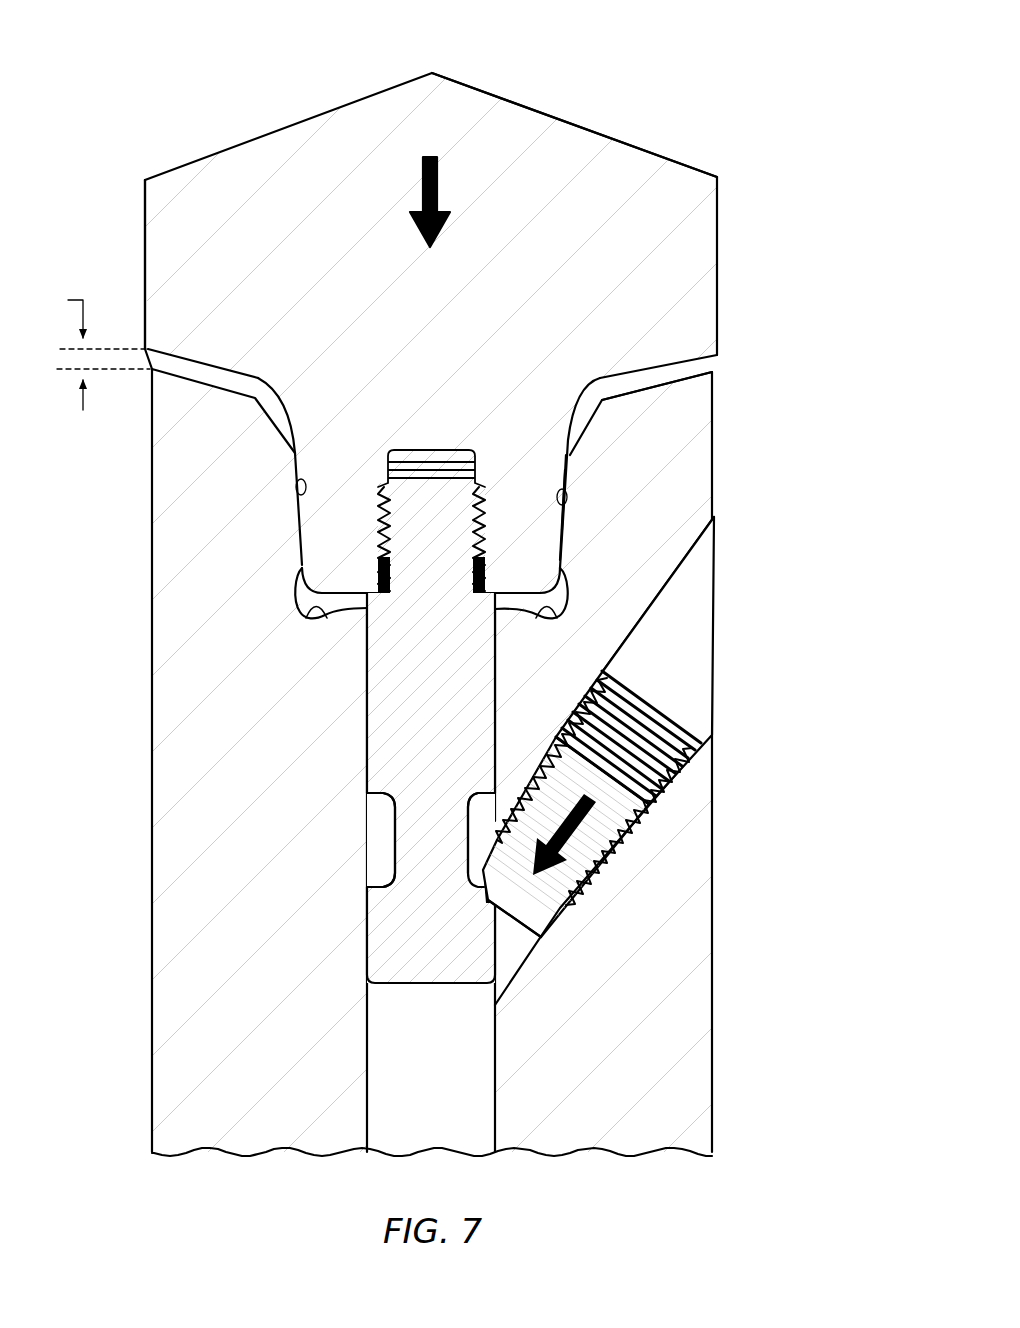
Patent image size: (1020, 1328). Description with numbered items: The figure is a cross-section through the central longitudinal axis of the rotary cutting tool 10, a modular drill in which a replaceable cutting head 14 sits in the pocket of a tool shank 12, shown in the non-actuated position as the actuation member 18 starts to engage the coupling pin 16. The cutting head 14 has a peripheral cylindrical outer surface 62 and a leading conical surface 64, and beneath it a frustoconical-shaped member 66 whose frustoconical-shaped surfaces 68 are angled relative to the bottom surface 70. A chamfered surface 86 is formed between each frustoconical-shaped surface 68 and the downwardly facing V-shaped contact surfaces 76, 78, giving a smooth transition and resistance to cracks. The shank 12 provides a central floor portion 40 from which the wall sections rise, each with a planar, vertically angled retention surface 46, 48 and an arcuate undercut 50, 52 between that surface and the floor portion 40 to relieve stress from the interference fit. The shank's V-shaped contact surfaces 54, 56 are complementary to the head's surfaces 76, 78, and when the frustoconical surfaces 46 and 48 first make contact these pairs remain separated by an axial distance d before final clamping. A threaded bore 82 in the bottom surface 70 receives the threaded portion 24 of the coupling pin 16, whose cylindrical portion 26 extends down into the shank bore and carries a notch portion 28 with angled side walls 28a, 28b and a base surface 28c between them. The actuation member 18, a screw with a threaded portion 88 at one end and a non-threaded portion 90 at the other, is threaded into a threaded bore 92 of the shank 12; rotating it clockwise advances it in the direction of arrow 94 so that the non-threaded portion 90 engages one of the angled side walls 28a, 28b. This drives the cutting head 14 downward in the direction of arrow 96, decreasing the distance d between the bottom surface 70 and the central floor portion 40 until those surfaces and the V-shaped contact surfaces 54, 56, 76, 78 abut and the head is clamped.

The rotary cutting tool 10 is at (104, 58).
The tool shank 12 is at (124, 928).
The cutting head 14 is at (747, 220).
The coupling pin 16 is at (364, 731).
The actuation member 18 is at (639, 845).
The threaded portion 24 is at (509, 720).
The cylindrical portion 26 is at (368, 766).
The notch portion 28 is at (474, 861).
The angled side wall 28a is at (381, 886).
The angled side wall 28b is at (479, 797).
The base surface 28c is at (466, 840).
The central floor portion 40 is at (510, 607).
The retention surface 46 is at (296, 487).
The retention surface 48 is at (567, 497).
The undercut 50 is at (313, 612).
The undercut 52 is at (572, 590).
The V-shaped contact surface 54 is at (208, 378).
The V-shaped contact surface 56 is at (668, 378).
The outer surface 62 is at (144, 224).
The leading conical surface 64 is at (285, 122).
The frustoconical-shaped member 66 is at (576, 543).
The frustoconical-shaped surface 68 is at (566, 520).
The bottom surface 70 is at (355, 607).
The V-shaped contact surface 76 is at (705, 360).
The V-shaped contact surface 78 is at (150, 358).
The threaded bore 82 is at (390, 520).
The chamfered surface 86 is at (280, 398).
The threaded portion 88 is at (598, 700).
The non-threaded portion 90 is at (560, 912).
The threaded bore 92 is at (563, 752).
The arrow 94 is at (604, 870).
The arrow 96 is at (421, 178).
The distance d is at (67, 349).